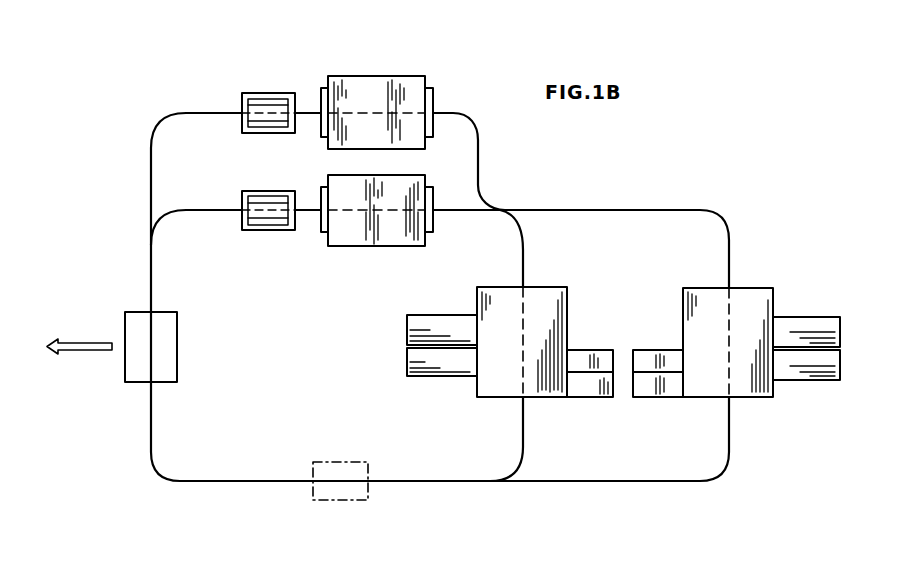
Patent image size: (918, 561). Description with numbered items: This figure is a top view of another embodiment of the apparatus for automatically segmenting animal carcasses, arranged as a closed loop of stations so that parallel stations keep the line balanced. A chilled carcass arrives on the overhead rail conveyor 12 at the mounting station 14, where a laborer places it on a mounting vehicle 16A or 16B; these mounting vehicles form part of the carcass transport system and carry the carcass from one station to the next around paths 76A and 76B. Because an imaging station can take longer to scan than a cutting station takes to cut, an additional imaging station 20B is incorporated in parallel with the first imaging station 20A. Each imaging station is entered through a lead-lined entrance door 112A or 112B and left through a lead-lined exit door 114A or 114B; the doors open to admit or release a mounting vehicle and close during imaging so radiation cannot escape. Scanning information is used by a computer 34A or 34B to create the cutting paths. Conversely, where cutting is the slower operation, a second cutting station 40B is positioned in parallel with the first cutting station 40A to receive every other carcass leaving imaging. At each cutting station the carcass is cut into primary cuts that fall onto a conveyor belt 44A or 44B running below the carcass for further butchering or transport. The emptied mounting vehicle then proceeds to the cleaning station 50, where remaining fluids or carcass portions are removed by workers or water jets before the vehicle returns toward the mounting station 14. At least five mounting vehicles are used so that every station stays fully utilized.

The rail conveyor 12 is at (83, 340).
The mounting station 14 is at (130, 383).
The mounting vehicle 16A is at (246, 232).
The mounting vehicle 16B is at (268, 93).
The first imaging station 20A is at (387, 246).
The additional imaging station 20B is at (393, 83).
The entrance door 112A is at (323, 234).
The entrance door 112B is at (329, 78).
The exit door 114A is at (433, 222).
The exit door 114B is at (433, 100).
The optical loop path 76A is at (208, 209).
The optical loop path 76B is at (151, 193).
The first cutting station 40A is at (500, 393).
The second cutting station 40B is at (758, 295).
The computer 34A is at (592, 350).
The computer 34B is at (657, 350).
The conveyor belt 44A is at (433, 376).
The conveyor belt 44B is at (828, 317).
The cleaning station 50 is at (343, 500).